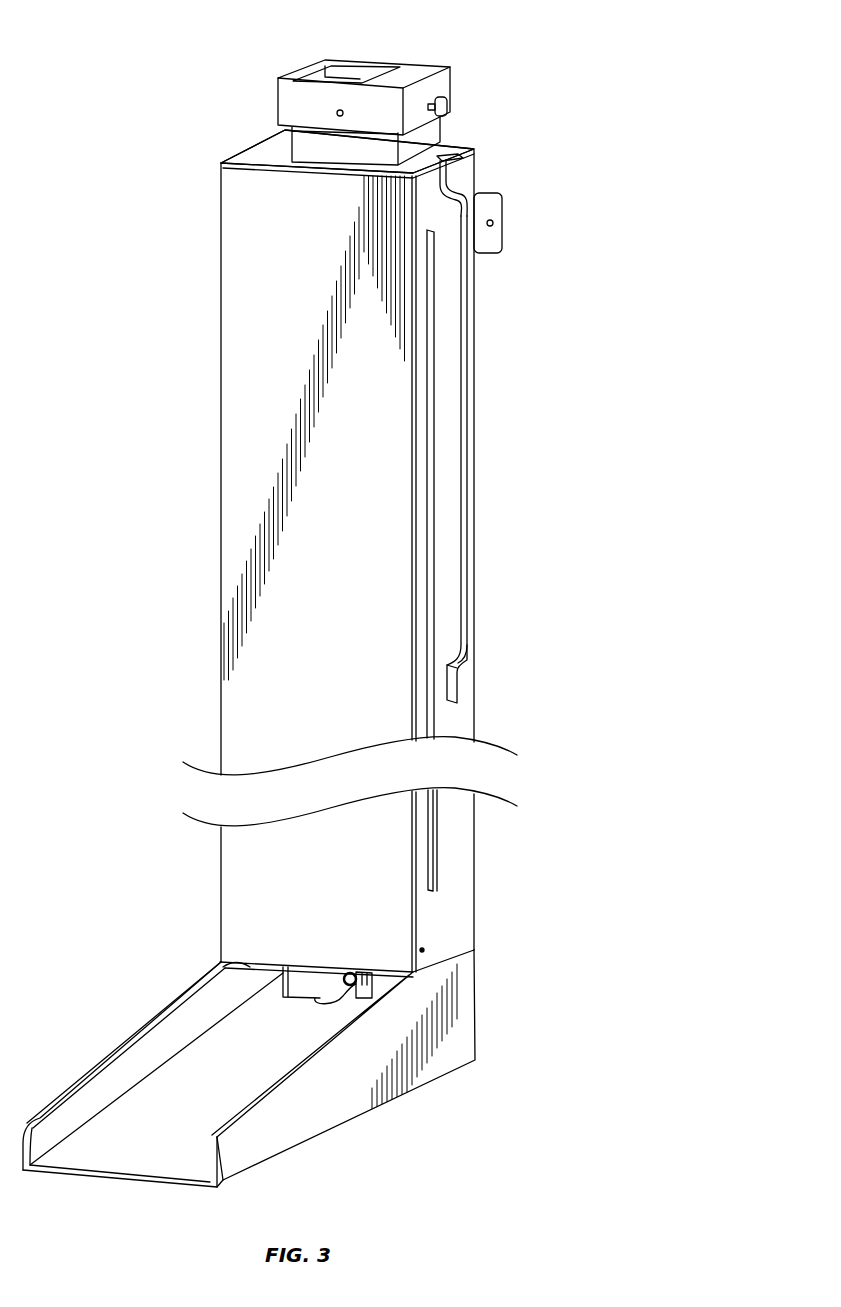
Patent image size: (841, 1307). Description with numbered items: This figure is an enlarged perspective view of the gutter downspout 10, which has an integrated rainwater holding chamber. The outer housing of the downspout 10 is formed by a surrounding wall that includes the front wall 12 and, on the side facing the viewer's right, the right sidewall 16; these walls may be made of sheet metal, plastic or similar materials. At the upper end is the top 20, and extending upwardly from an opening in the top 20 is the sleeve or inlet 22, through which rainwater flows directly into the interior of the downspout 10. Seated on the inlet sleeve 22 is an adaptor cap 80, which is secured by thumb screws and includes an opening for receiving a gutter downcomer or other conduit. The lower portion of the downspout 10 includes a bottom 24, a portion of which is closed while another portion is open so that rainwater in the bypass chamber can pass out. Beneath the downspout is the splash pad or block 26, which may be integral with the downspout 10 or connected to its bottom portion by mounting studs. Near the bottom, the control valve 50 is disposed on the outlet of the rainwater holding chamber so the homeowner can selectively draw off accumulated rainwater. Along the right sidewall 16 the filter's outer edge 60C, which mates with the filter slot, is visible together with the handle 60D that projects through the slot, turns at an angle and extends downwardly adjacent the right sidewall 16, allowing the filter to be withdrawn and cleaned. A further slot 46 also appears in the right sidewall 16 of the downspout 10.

The gutter downspout 10 is at (128, 500).
The front wall 12 is at (258, 301).
The right sidewall 16 is at (442, 533).
The top 20 is at (260, 152).
The sleeve or inlet 22 is at (327, 142).
The bottom 24 is at (212, 972).
The splash pad or block 26 is at (200, 1092).
The lower slot 46 is at (440, 853).
The control valve 50 is at (315, 998).
The outer edge 60C is at (473, 160).
The handle 60D is at (472, 483).
The adaptor cap 80 is at (403, 77).